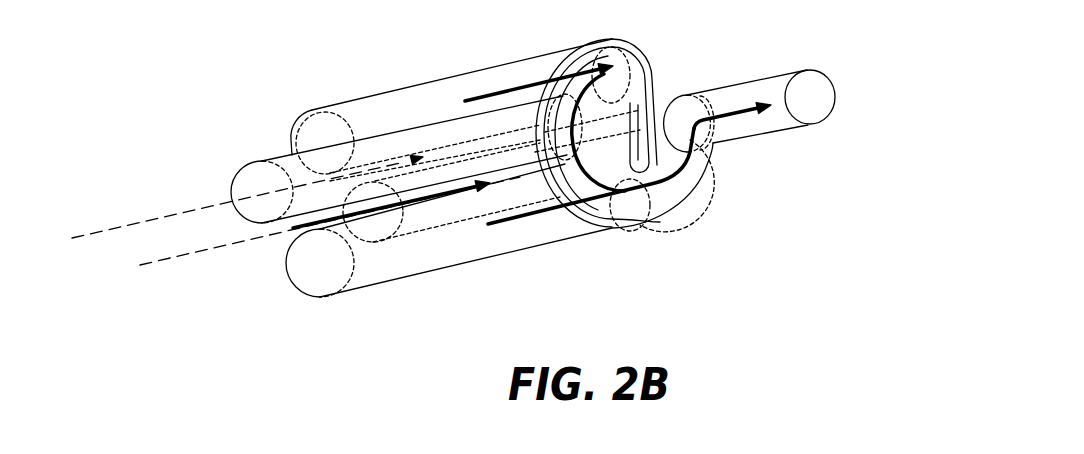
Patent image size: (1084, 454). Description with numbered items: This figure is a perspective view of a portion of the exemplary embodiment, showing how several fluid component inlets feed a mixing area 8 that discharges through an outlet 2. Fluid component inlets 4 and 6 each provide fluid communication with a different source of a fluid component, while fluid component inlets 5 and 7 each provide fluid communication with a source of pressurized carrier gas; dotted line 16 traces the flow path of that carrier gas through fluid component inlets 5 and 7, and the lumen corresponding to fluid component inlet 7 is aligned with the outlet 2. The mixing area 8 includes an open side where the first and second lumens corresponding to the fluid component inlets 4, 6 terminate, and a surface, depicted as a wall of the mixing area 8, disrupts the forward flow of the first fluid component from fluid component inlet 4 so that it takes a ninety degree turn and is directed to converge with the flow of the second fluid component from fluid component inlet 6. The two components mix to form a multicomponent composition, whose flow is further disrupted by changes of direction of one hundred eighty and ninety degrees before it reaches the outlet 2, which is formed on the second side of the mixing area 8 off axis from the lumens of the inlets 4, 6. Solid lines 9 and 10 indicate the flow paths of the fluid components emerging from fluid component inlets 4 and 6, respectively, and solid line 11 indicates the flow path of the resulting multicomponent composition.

The outlet 2 is at (820, 95).
The fluid component inlet 4 is at (290, 128).
The fluid component inlet 5 is at (228, 178).
The fluid component inlet 6 is at (289, 283).
The fluid component inlet 7 is at (371, 241).
The mixing area 8 is at (613, 127).
The solid line 9 is at (519, 80).
The solid line 10 is at (547, 222).
The solid line 11 is at (733, 128).
The dotted line 16 is at (178, 207).